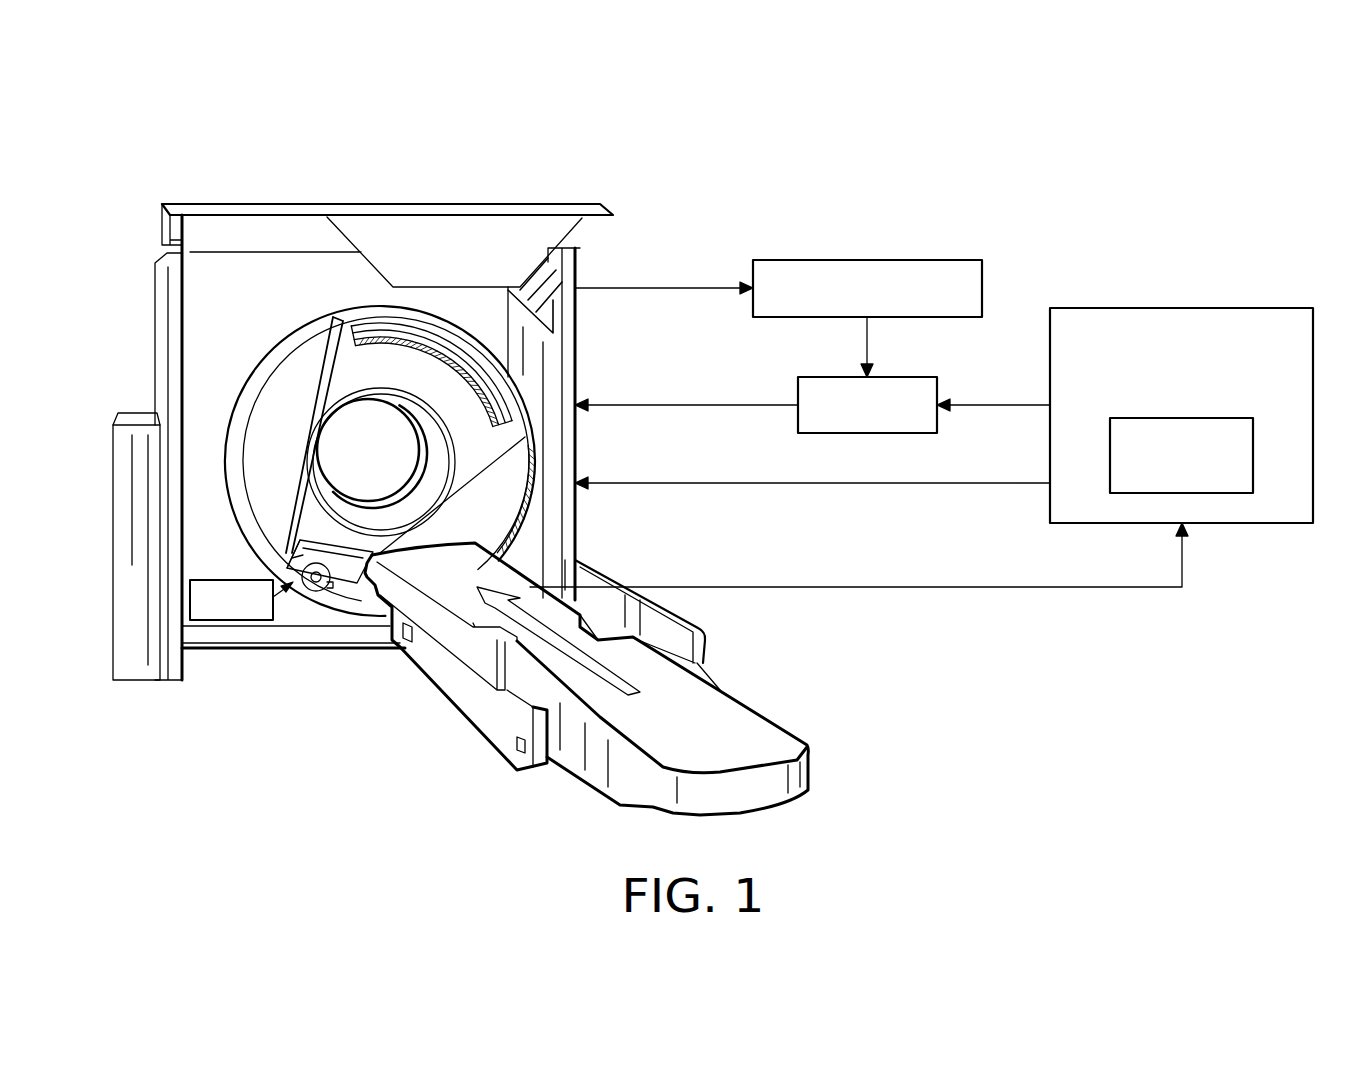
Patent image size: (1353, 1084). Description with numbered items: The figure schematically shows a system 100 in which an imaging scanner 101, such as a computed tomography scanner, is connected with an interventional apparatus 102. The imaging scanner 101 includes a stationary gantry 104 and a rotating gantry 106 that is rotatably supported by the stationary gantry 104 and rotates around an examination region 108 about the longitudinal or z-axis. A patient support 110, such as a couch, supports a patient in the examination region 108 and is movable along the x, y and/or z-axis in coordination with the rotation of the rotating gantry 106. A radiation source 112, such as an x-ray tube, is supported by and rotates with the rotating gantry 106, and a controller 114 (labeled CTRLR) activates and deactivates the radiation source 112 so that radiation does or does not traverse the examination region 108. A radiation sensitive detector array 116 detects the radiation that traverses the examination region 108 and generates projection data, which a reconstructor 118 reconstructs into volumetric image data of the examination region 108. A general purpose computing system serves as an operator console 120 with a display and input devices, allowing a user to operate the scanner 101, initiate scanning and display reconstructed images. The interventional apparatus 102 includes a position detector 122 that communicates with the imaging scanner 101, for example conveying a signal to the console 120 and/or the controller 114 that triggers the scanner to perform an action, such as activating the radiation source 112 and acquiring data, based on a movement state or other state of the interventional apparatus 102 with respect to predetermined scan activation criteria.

The system 100 is at (1133, 175).
The imaging scanner 101 is at (960, 205).
The interventional apparatus 102 is at (1263, 308).
The stationary gantry 104 is at (172, 306).
The rotating gantry 106 is at (340, 362).
The examination region 108 is at (387, 463).
The patient support 110 is at (765, 732).
The radiation source 112 is at (313, 590).
The controller 114 is at (242, 620).
The radiation sensitive detector array 116 is at (478, 363).
The reconstructor 118 is at (808, 260).
The console 120 is at (903, 433).
The position detector 122 is at (1240, 493).